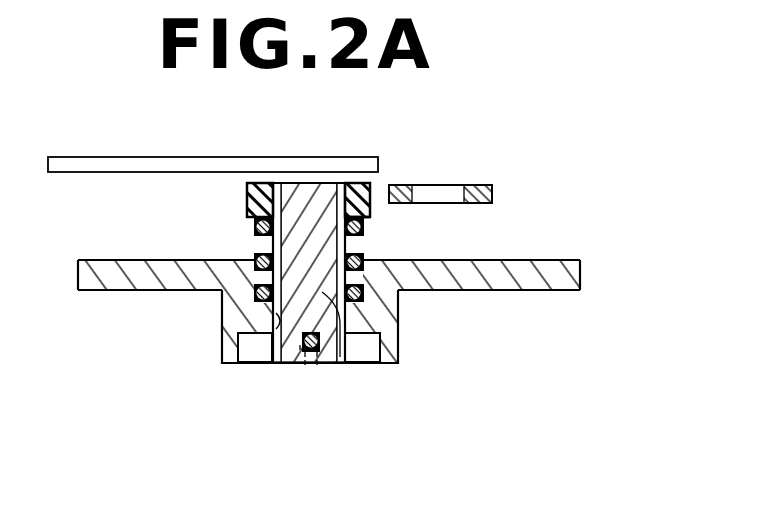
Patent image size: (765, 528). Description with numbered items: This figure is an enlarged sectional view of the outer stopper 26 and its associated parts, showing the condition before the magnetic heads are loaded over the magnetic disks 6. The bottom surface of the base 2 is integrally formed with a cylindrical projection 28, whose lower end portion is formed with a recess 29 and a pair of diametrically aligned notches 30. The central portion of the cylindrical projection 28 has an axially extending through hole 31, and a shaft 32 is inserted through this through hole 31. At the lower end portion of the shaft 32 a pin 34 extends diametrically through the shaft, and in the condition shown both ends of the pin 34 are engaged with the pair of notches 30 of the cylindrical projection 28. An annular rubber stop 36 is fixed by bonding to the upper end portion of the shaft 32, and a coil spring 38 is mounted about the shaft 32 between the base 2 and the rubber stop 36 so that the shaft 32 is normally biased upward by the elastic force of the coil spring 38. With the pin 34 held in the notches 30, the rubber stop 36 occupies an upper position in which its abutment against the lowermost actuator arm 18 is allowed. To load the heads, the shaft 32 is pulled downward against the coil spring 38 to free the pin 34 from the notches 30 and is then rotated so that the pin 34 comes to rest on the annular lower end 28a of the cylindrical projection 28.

The base 2 is at (538, 260).
The magnetic disks 6 is at (153, 157).
The lowermost actuator arm 18 is at (489, 189).
The outer stopper 26 is at (381, 180).
The cylindrical projection 28 is at (400, 331).
The annular lower end 28a is at (389, 366).
The recess 29 is at (238, 351).
The notches 30 is at (303, 364).
The through hole 31 is at (273, 333).
The shaft 32 is at (345, 363).
The pin 34 is at (312, 354).
The rubber stop 36 is at (370, 215).
The coil spring 38 is at (255, 251).